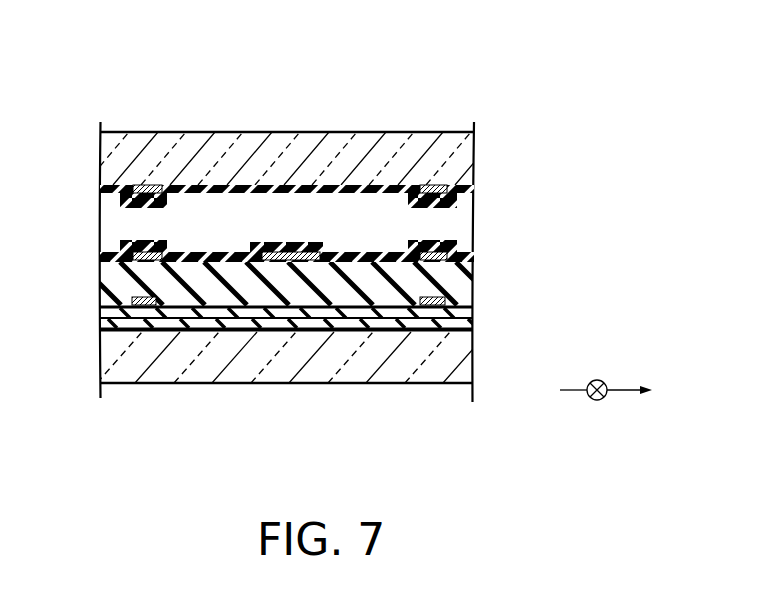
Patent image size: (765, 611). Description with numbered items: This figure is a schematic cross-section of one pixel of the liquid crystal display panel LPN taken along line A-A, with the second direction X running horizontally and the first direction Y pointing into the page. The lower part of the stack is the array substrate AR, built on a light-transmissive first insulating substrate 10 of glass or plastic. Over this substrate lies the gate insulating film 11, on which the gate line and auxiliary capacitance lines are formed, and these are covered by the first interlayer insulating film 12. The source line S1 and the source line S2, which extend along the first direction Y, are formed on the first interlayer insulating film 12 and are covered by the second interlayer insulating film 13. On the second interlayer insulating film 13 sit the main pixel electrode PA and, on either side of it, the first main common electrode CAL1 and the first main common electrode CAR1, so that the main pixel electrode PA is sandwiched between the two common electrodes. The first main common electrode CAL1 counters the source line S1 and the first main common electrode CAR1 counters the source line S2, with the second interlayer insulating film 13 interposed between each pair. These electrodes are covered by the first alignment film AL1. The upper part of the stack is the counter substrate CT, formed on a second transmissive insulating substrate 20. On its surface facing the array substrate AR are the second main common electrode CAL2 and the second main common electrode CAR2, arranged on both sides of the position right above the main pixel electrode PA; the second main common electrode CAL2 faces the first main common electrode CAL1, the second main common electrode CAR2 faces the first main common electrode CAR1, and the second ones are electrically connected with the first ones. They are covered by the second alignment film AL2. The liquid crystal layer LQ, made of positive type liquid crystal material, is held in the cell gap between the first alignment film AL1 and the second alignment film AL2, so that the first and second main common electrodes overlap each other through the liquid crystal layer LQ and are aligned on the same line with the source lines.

The second insulating substrate 20 is at (468, 150).
The second alignment film AL2 is at (471, 190).
The second main common electrode CAL2 is at (146, 186).
The second main common electrode CAR2 is at (433, 186).
The liquid crystal layer LQ is at (467, 224).
The first alignment film AL1 is at (470, 256).
The first main common electrode CAL1 is at (146, 240).
The first main common electrode CAR1 is at (432, 240).
The main pixel electrode PA is at (282, 263).
The second interlayer insulating film 13 is at (468, 288).
The first interlayer insulating film 12 is at (470, 313).
The gate insulating film 11 is at (470, 323).
The first insulating substrate 10 is at (470, 358).
The source line S1 is at (143, 306).
The source line S2 is at (430, 306).
The counter substrate CT is at (95, 151).
The array substrate AR is at (95, 349).
The liquid crystal display panel LPN is at (575, 192).
The line A- A is at (288, 280).
The second direction X is at (616, 393).
The first direction Y is at (597, 402).